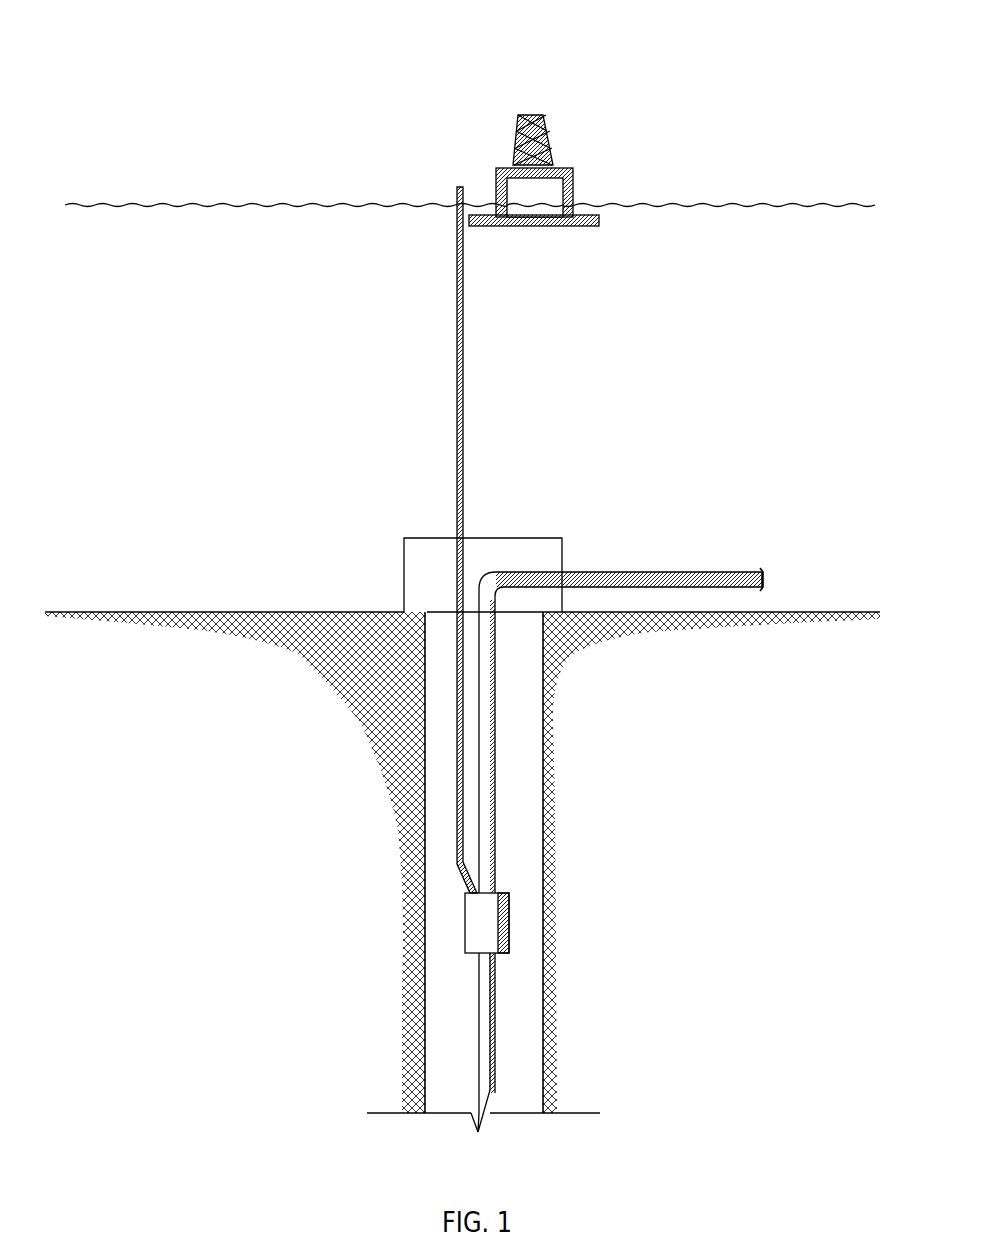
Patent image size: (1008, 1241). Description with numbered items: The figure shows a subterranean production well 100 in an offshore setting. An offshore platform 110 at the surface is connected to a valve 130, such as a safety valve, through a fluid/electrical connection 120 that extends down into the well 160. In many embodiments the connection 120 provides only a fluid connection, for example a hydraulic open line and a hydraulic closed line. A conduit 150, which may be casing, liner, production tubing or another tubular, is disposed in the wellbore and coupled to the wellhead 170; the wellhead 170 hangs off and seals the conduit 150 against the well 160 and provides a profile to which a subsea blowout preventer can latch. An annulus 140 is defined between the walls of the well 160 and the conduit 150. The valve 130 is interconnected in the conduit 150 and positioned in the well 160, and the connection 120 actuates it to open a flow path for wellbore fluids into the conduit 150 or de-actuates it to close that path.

The subterranean production well 100 is at (311, 77).
The offshore platform 110 is at (586, 123).
The fluid/electrical connection 120 is at (463, 503).
The valve 130 is at (514, 911).
The annulus 140 is at (535, 842).
The conduit 150 is at (497, 737).
The well 160 is at (545, 790).
The wellhead 170 is at (563, 540).